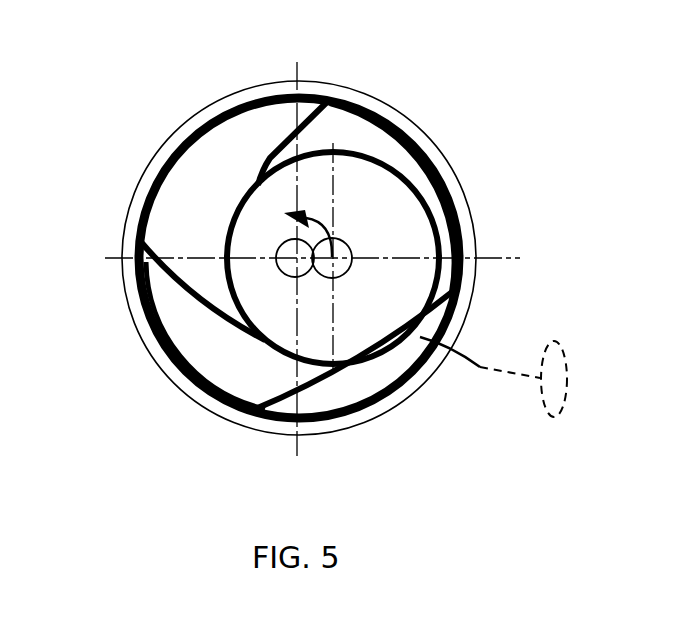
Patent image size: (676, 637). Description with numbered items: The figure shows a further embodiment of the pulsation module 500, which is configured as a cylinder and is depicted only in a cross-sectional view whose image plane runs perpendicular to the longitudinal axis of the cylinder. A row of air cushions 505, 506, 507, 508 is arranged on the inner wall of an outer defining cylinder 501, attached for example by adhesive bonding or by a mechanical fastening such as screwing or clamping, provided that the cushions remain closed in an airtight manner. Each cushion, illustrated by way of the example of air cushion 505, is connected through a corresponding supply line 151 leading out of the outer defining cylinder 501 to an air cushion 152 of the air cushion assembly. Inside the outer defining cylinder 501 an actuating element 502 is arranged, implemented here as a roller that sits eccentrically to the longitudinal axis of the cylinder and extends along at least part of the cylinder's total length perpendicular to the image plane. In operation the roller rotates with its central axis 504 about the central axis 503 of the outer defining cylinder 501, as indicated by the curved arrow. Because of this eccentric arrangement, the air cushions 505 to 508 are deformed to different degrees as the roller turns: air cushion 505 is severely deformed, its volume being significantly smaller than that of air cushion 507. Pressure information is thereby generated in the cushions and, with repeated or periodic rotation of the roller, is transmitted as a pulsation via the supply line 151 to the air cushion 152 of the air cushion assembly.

The pulsation module 500 is at (118, 87).
The outer defining cylinder 501 is at (443, 158).
The actuating element 502 is at (417, 258).
The central axis of outer defining cylinder 503 is at (303, 273).
The central axis of the roller 504 is at (341, 247).
The air cushion 505 is at (377, 387).
The air cushion 506 is at (187, 355).
The air cushion 507 is at (168, 204).
The air cushion 508 is at (363, 131).
The supply line 151 is at (463, 358).
The air cushion of the air cushion assembly 152 is at (569, 372).